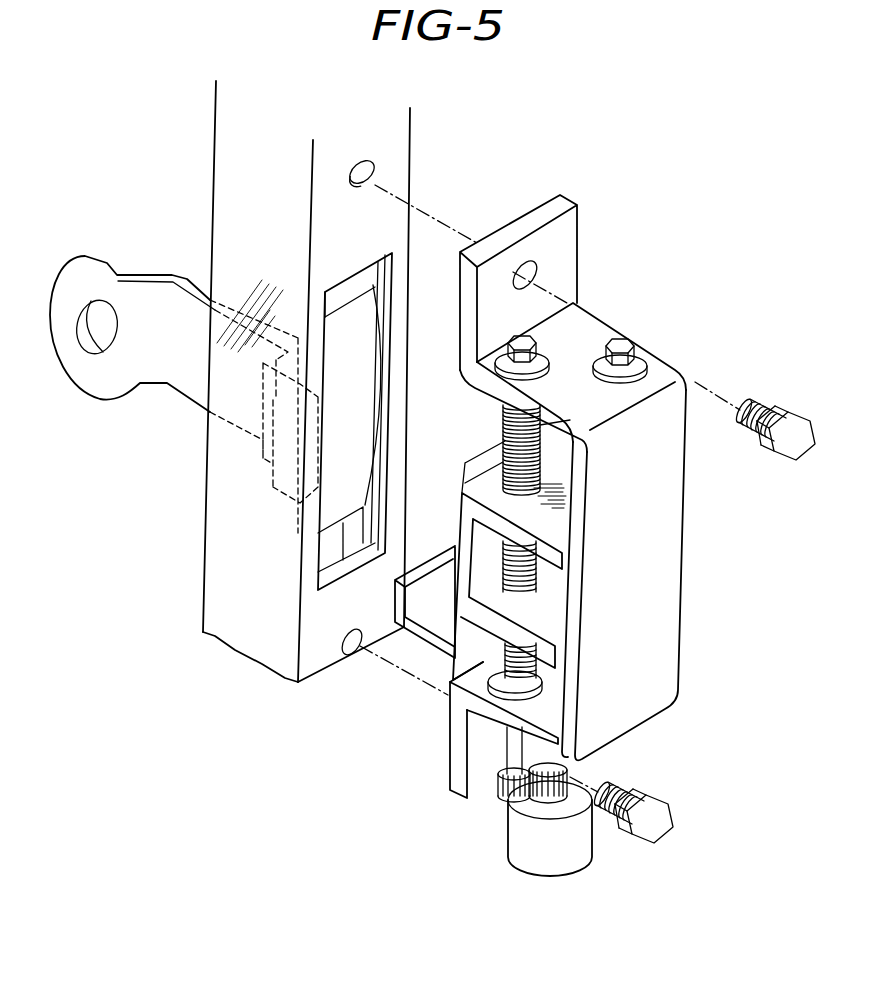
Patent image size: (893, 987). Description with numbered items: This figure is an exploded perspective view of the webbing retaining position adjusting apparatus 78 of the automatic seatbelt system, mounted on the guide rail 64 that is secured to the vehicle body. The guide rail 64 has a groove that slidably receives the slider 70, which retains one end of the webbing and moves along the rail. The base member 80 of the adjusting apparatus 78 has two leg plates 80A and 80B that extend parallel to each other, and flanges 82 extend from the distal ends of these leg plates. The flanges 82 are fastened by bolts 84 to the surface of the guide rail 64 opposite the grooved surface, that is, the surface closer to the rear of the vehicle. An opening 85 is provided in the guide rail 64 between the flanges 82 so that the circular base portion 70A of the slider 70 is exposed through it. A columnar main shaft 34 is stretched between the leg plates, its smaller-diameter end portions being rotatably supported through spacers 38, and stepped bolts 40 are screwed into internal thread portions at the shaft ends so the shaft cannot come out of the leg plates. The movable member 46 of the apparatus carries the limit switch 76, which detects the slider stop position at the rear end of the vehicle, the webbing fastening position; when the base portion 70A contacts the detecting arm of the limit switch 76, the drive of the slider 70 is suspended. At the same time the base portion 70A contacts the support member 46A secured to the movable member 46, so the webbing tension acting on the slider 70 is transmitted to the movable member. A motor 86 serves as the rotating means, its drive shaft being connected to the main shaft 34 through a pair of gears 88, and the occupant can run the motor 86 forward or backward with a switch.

The guide rail 64 is at (429, 139).
The slider 70 is at (182, 398).
The circular base portion 70A is at (372, 411).
The opening 85 is at (320, 567).
The webbing retaining position adjusting apparatus 78 is at (569, 489).
The base member 80 is at (697, 512).
The leg plate 80A is at (600, 328).
The leg plate 80B is at (552, 713).
The flange 82 is at (540, 240).
The stepped bolt 40 is at (530, 342).
The spacer 38 is at (537, 372).
The main shaft 34 is at (556, 467).
The limit switch 76 is at (483, 455).
The movable member 46 is at (455, 505).
The support member 46A is at (395, 625).
The bolt 84 is at (797, 458).
The motor 86 is at (590, 847).
The gear 88 is at (494, 811).